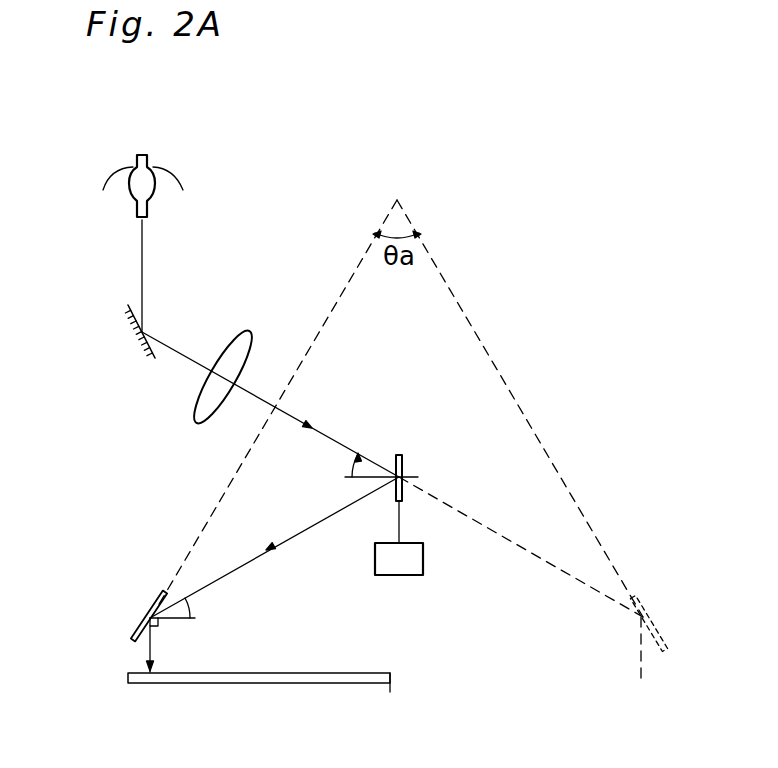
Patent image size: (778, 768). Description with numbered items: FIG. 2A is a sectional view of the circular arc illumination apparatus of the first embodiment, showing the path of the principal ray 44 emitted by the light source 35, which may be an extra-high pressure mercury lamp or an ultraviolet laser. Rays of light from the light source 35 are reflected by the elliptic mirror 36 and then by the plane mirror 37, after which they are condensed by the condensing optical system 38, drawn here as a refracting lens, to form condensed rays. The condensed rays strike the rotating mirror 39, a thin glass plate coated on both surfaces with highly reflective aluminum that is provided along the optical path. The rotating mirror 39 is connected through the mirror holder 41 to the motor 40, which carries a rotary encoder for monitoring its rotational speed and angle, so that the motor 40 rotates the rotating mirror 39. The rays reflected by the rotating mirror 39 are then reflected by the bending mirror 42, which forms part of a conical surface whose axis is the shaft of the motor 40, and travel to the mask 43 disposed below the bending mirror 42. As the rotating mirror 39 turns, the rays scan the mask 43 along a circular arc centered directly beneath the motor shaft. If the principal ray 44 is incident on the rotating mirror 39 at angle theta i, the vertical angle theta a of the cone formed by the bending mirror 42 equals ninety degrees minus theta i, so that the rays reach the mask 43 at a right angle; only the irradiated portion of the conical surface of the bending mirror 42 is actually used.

The light source 35 is at (160, 190).
The elliptic mirror 36 is at (105, 188).
The plane mirror 37 is at (138, 342).
The condensing optical system 38 is at (242, 332).
The rotating mirror 39 is at (402, 460).
The motor 40 is at (423, 562).
The mirror holder 41 is at (400, 518).
The bending mirror 42 is at (160, 594).
The mask 43 is at (313, 683).
The principal ray 44 is at (173, 349).